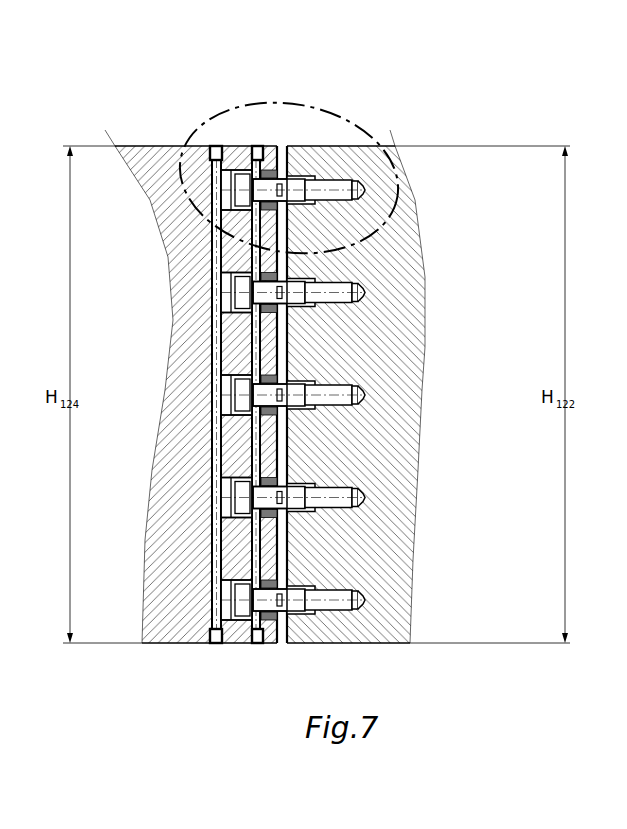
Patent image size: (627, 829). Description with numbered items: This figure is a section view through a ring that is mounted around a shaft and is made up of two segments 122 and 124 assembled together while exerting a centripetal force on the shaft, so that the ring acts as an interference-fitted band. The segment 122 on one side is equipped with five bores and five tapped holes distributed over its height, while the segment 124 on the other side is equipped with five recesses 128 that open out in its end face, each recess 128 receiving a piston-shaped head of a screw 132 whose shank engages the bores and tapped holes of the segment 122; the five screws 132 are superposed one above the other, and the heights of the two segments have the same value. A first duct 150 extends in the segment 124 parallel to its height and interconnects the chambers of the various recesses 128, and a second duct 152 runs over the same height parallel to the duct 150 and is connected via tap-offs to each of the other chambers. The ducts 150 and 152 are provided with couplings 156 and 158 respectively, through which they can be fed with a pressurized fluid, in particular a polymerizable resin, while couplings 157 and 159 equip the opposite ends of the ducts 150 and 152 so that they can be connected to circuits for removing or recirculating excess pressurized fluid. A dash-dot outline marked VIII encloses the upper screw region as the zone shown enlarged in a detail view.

The segment 122 is at (403, 199).
The segment 124 is at (163, 555).
The recess 128 is at (292, 208).
The screw 132 is at (220, 398).
The first duct 150 is at (262, 341).
The second duct 152 is at (213, 431).
The coupling 156 is at (256, 645).
The coupling 157 is at (258, 145).
The coupling 158 is at (215, 645).
The coupling 159 is at (215, 145).
The detail view VIII is at (332, 100).